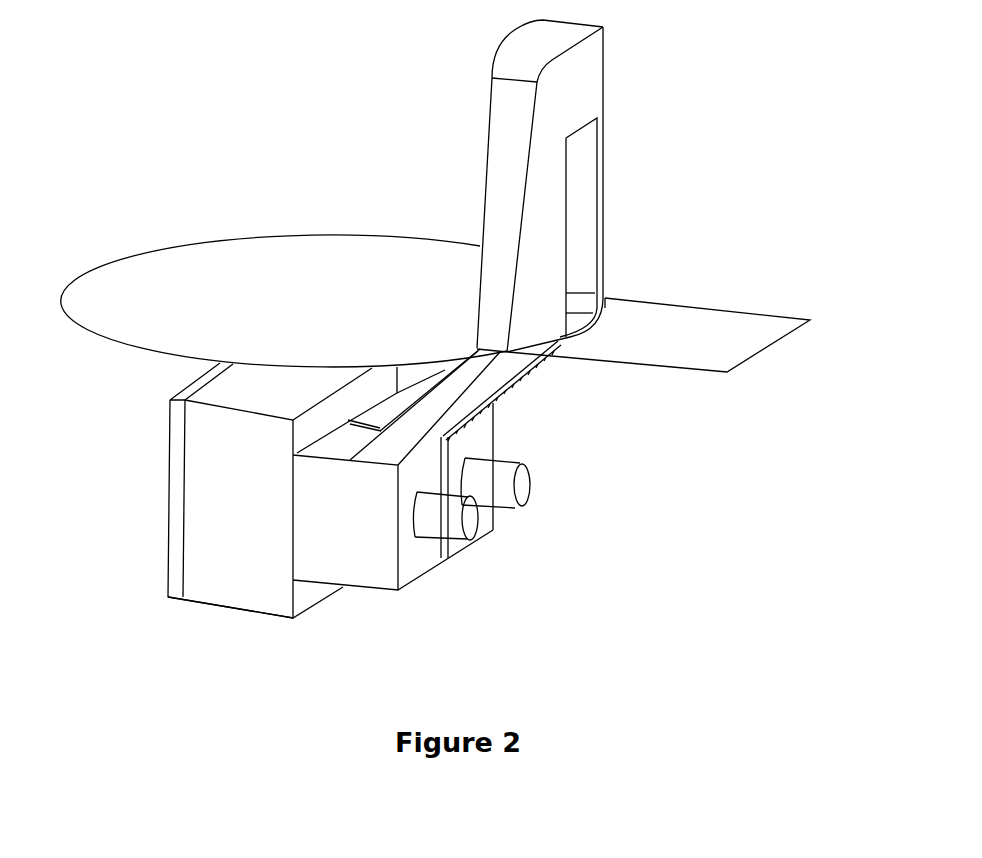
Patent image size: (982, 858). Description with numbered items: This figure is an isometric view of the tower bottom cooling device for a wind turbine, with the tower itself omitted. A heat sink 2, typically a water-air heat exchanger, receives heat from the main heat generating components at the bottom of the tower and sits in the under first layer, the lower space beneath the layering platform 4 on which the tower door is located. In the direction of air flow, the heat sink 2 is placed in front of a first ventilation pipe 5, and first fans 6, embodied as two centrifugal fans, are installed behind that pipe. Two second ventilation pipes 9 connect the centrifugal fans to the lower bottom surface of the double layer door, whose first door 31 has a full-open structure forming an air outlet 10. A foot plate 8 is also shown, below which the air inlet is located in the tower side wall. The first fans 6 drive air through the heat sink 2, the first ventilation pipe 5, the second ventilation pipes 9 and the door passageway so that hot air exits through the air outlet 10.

The heat sink 2 is at (172, 483).
The layering platform 4 is at (172, 260).
The first ventilation pipe 5 is at (212, 593).
The first fan 6 is at (483, 530).
The foot plate 8 is at (668, 307).
The second ventilation pipe 9 is at (477, 400).
The air outlet 10 is at (583, 193).
The first door 31 is at (595, 90).